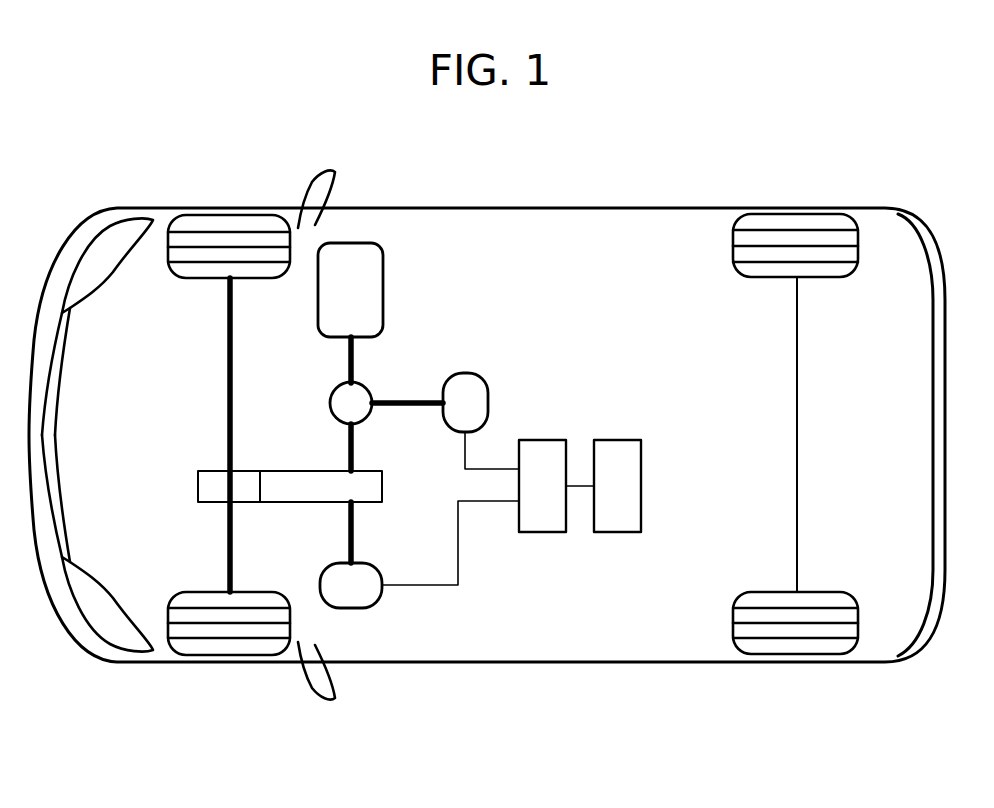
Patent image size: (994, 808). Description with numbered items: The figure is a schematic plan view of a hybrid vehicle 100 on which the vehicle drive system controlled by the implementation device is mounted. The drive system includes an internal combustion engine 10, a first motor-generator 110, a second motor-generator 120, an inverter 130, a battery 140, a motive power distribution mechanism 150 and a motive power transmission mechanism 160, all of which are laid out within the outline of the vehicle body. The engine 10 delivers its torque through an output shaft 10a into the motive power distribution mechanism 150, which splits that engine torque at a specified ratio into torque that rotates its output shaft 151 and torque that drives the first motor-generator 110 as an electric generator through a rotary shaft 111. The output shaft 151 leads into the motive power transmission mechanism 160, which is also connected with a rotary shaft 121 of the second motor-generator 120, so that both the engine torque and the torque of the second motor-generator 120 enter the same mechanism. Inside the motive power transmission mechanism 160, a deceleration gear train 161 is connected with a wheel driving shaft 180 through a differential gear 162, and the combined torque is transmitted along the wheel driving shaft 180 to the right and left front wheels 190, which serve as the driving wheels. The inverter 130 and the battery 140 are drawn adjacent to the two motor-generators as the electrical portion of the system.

The hybrid vehicle 100 is at (458, 207).
The internal combustion engine 10 is at (385, 292).
The output shaft of the engine 10a is at (348, 353).
The first motor-generator 110 is at (470, 372).
The rotary shaft of the first motor-generator 111 is at (410, 399).
The second motor-generator 120 is at (354, 609).
The rotary shaft of the second motor-generator 121 is at (355, 531).
The inverter 130 is at (542, 439).
The battery 140 is at (617, 439).
The motive power distribution mechanism 150 is at (329, 403).
The output shaft of the motive power distribution mechanism 151 is at (354, 439).
The motive power transmission mechanism 160 is at (253, 500).
The deceleration gear train 161 is at (320, 470).
The differential gear 162 is at (197, 487).
The wheel driving shaft 180 is at (227, 380).
The front wheels 190 is at (232, 214).